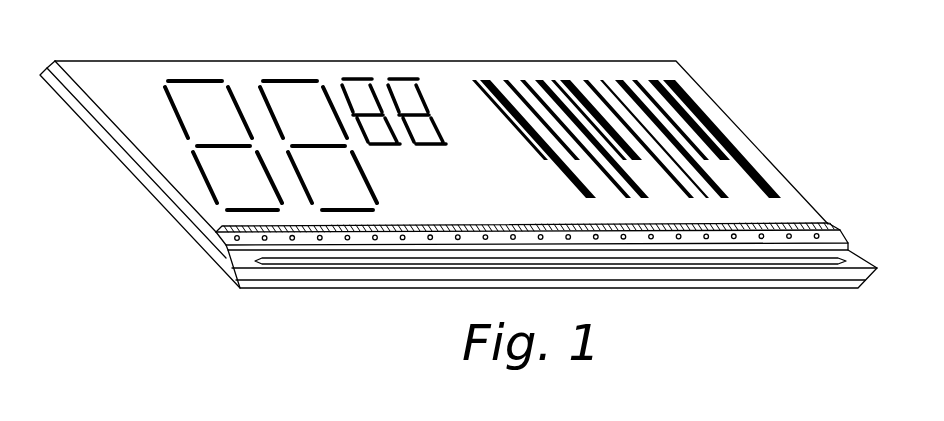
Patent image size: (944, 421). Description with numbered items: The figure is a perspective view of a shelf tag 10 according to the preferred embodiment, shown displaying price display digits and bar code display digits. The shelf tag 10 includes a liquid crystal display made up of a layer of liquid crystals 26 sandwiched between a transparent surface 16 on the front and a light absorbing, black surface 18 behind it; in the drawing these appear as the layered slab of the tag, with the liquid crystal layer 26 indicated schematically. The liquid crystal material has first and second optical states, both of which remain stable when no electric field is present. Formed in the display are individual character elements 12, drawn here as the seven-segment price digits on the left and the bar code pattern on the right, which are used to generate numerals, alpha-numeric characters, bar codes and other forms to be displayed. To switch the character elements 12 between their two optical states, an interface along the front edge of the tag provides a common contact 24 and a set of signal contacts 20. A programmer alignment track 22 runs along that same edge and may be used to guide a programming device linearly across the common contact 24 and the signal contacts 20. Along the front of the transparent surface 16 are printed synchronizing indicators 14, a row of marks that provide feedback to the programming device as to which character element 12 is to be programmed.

The shelf tag 10 is at (631, 27).
The character elements 12 is at (290, 78).
The synchronizing indicators 14 is at (792, 223).
The transparent surface 16 is at (95, 112).
The light absorbing surface 18 is at (113, 152).
The signal contacts 20 is at (228, 252).
The programmer alignment track 22 is at (228, 280).
The common contact 24 is at (823, 262).
The layer of liquid crystals 26 is at (448, 82).